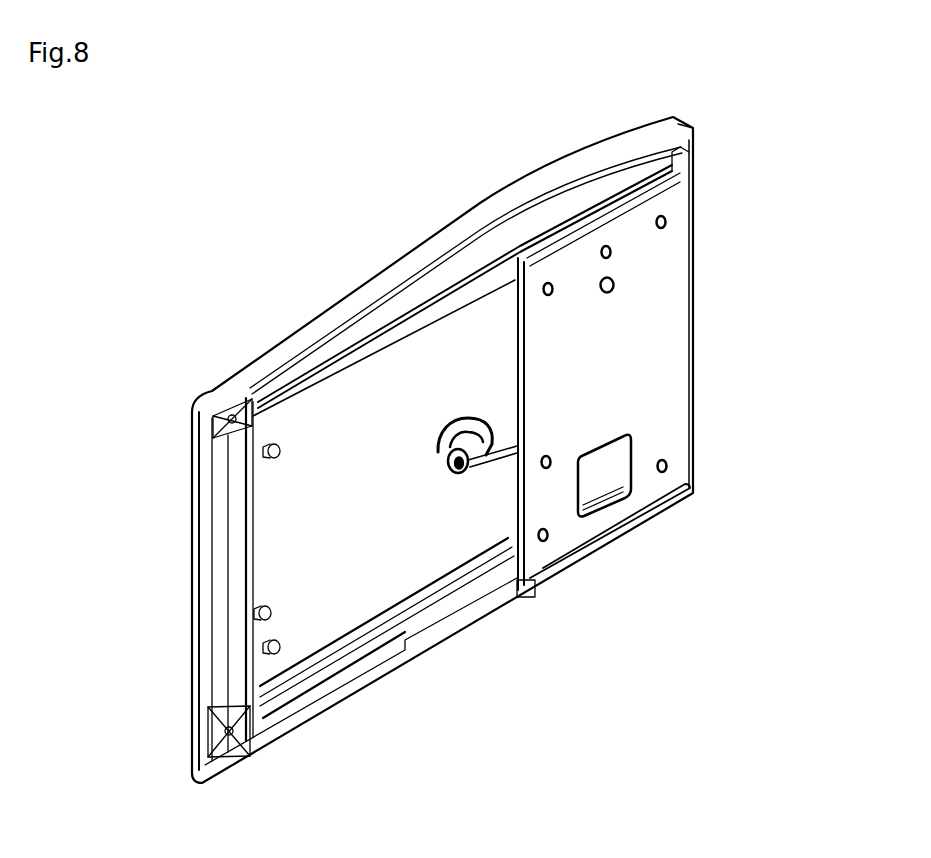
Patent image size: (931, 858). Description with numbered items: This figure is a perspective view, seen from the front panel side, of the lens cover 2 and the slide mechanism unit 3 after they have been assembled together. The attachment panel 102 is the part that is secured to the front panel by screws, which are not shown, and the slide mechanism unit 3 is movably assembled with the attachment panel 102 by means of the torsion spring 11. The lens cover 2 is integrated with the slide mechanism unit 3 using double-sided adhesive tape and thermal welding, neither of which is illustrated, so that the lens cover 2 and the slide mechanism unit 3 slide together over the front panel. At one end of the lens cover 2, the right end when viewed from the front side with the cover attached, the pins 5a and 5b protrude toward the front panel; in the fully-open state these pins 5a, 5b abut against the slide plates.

The lens cover 2 is at (648, 140).
The slide mechanism unit 3 is at (407, 558).
The pin 5a is at (213, 413).
The pin 5b is at (207, 708).
The torsion spring 11 is at (498, 456).
The attachment panel 102 is at (620, 327).